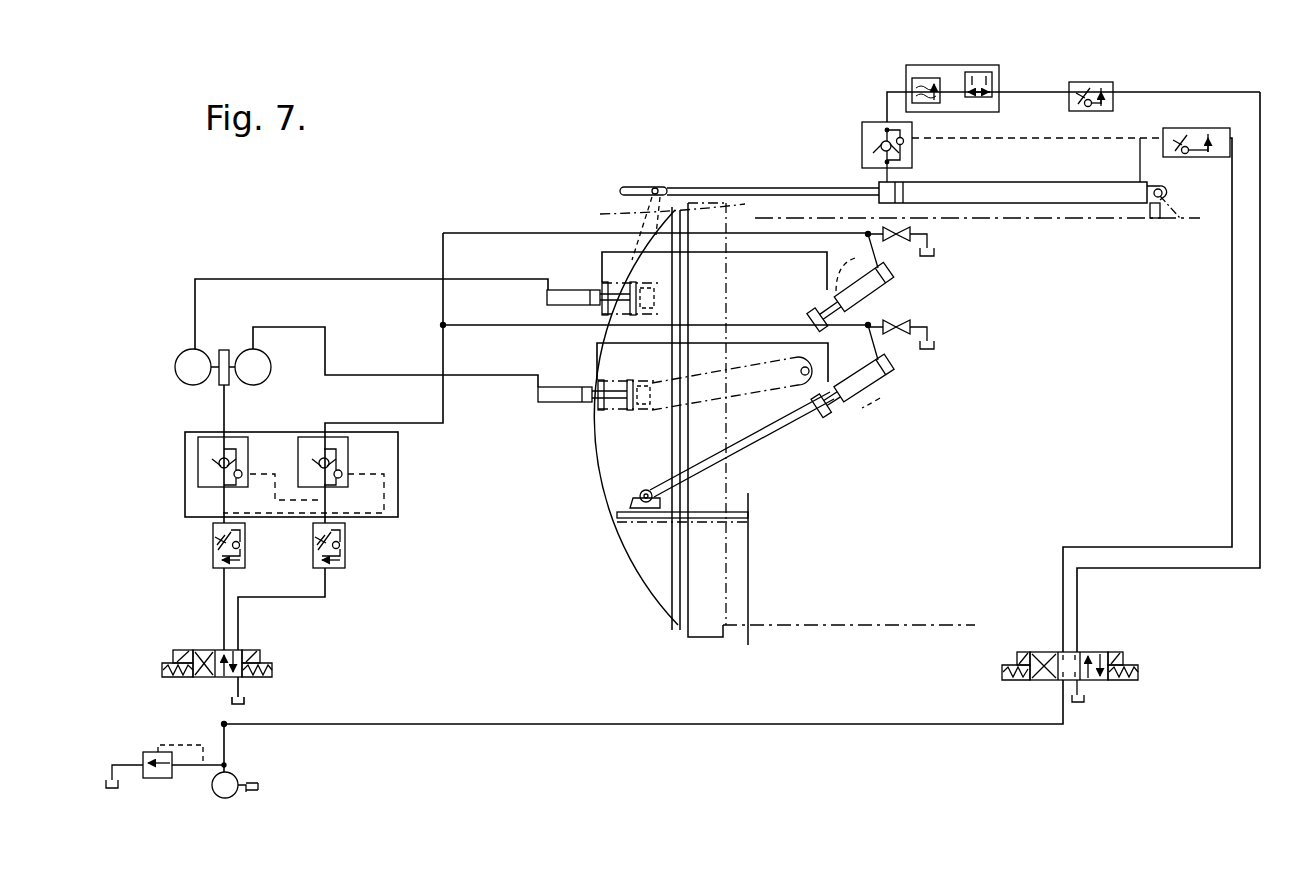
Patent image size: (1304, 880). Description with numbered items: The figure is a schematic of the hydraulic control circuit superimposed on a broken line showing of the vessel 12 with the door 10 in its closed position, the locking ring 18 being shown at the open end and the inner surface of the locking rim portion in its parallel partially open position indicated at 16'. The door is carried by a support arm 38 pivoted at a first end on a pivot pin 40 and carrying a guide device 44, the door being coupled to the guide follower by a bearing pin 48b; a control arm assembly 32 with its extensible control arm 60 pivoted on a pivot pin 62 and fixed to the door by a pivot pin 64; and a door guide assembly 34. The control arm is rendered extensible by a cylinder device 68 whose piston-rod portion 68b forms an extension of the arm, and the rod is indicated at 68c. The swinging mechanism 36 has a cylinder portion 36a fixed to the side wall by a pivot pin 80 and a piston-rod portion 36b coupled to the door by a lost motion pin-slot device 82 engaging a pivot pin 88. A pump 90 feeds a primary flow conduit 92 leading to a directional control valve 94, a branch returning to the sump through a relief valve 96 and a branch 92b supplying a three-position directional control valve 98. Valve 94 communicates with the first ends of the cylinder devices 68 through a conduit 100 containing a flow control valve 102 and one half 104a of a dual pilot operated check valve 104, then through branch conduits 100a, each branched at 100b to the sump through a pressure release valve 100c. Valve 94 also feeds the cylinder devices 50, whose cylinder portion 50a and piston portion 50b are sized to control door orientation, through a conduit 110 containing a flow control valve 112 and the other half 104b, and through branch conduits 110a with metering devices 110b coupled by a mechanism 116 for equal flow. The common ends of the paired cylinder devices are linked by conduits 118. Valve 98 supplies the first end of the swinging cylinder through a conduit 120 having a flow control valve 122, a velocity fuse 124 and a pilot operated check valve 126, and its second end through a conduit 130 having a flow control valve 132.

The door 10 is at (640, 598).
The vessel 12 is at (828, 630).
The locking rim portion in parallel partially open position 16' is at (964, 211).
The locking ring 18 is at (700, 642).
The control arm assembly 32 is at (815, 445).
The door guide assembly 34 is at (625, 520).
The mechanism for swinging the door 36 is at (923, 199).
The cylinder portion 36a is at (1058, 180).
The piston-rod portion 36b is at (785, 186).
The support arm 38 is at (790, 392).
The pivot pin 40 is at (800, 372).
The guide device 44 is at (640, 415).
The bearing pin 48b is at (672, 322).
The cylinder device 50 is at (539, 345).
The cylinder portion 50a is at (555, 290).
The piston head and rod portion 50b is at (560, 308).
The extensible control arm 60 is at (768, 445).
The pivot pin 62 is at (858, 249).
The pivot pin 64 is at (648, 490).
The second operator device 68 is at (869, 340).
The piston-rod portion 68b is at (808, 310).
The cylinder rod 68c is at (862, 301).
The pivot pin 80 is at (1158, 218).
The lost motion pin-slot device 82 is at (620, 185).
The pivot pin 88 is at (660, 186).
The pump 90 is at (238, 775).
The primary flow conduit 92 is at (232, 747).
The branch conduit 92b is at (455, 722).
The directional control valve 94 is at (272, 652).
The relief valve 96 is at (130, 755).
The directional control valve 98 is at (1128, 655).
The conduit 100 is at (240, 614).
The branch conduit 100a is at (466, 232).
The branch 100b is at (937, 252).
The pressure release valve 100c is at (915, 231).
The pressure compensated constant flow control valve 102 is at (350, 549).
The dual pilot operated check valve 104 is at (271, 454).
The half of dual pilot operated check valve 104a is at (352, 461).
The half of dual pilot operated check valve 104b is at (196, 461).
The conduit 110 is at (222, 609).
The branch conduit 110a is at (278, 277).
The metering device 110b is at (180, 380).
The pressure compensated constant flow control valve 112 is at (208, 553).
The mechanism 116 is at (226, 348).
The conduit 118 is at (742, 254).
The conduit 120 is at (1162, 572).
The pressure compensated constant flow control valve 122 is at (1118, 82).
The velocity fuse 124 is at (903, 72).
The single pilot operated check valve 126 is at (858, 122).
The conduit 130 is at (1150, 546).
The pressure compensated constant flow control valve 132 is at (1180, 128).